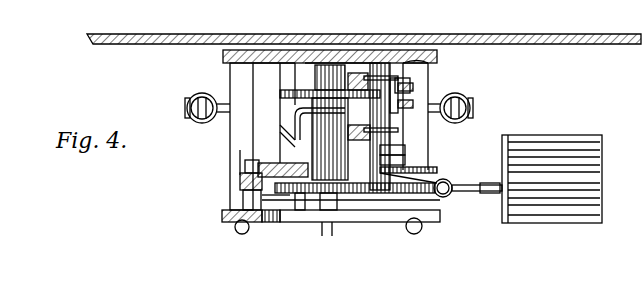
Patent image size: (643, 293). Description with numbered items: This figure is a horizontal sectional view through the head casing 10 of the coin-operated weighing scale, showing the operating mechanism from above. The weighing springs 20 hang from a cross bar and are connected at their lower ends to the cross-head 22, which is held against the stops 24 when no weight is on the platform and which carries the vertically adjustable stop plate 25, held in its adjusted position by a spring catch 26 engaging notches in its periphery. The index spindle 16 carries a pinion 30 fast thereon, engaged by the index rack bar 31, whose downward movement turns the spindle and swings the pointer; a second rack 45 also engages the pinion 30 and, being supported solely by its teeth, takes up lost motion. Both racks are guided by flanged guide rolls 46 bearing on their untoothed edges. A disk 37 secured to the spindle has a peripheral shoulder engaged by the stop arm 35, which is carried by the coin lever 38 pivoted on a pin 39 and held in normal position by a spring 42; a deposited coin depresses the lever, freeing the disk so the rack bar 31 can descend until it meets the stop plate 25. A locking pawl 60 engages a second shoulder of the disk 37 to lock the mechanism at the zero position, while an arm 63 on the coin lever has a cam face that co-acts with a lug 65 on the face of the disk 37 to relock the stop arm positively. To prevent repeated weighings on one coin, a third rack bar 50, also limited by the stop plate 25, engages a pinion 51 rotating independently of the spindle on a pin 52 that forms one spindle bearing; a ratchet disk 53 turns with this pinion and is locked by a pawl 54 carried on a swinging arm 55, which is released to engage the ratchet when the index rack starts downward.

The head casing 10 is at (567, 44).
The index spindle 16 is at (327, 236).
The weighing springs 20 is at (200, 122).
The cross-head 22 is at (214, 99).
The stops 24 is at (280, 125).
The stop plate or disk 25 is at (294, 115).
The spring catch 26 is at (280, 147).
The pinion 30 is at (295, 165).
The index rack bar 31 is at (405, 151).
The stop arm 35 is at (392, 195).
The disk 37 is at (358, 195).
The coin lever 38 is at (438, 197).
The pin 39 is at (422, 230).
The spring 42 is at (470, 194).
The second rack 45 is at (405, 161).
The flanged guide rolls 46 is at (430, 64).
The third rack bar 50 is at (377, 50).
The pinion 51 is at (320, 63).
The pin 52 is at (336, 63).
The ratchet wheel or disk 53 is at (303, 90).
The pawl 54 is at (404, 112).
The swinging arm 55 is at (414, 96).
The locking pawl 60 is at (243, 192).
The arm 63 is at (378, 200).
The pin or lug 65 is at (300, 211).